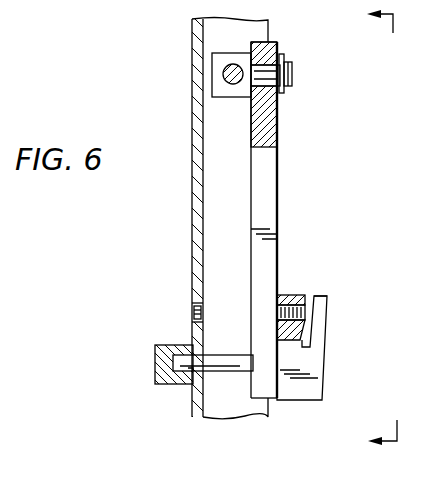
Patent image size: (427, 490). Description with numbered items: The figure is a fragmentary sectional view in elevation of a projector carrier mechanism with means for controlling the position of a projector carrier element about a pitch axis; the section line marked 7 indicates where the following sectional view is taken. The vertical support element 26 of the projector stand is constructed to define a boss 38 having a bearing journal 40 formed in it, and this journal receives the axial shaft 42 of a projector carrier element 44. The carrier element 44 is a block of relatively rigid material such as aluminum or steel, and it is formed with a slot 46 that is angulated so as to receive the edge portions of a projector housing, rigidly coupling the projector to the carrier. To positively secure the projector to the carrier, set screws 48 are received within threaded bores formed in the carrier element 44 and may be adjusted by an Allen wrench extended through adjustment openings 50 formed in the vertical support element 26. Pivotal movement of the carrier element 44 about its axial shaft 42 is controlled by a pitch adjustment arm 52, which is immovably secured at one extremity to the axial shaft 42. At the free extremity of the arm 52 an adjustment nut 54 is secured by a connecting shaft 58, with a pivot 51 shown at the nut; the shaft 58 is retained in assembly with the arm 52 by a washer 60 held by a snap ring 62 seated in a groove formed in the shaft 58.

The vertical support element 26 is at (197, 190).
The boss 38 is at (155, 352).
The bearing journal 40 is at (183, 371).
The axial shaft 42 is at (190, 356).
The projector carrier element 44 is at (325, 358).
The slot 46 is at (313, 300).
The set screws 48 is at (293, 294).
The adjustment openings 50 is at (195, 313).
The pivot pin 51 is at (227, 79).
The pitch adjustment arm 52 is at (272, 178).
The adjustment nut 54 is at (219, 62).
The connecting shaft 58 is at (268, 88).
The washer 60 is at (285, 60).
The snap ring 62 is at (291, 90).
The section line 7- 7 is at (372, 230).